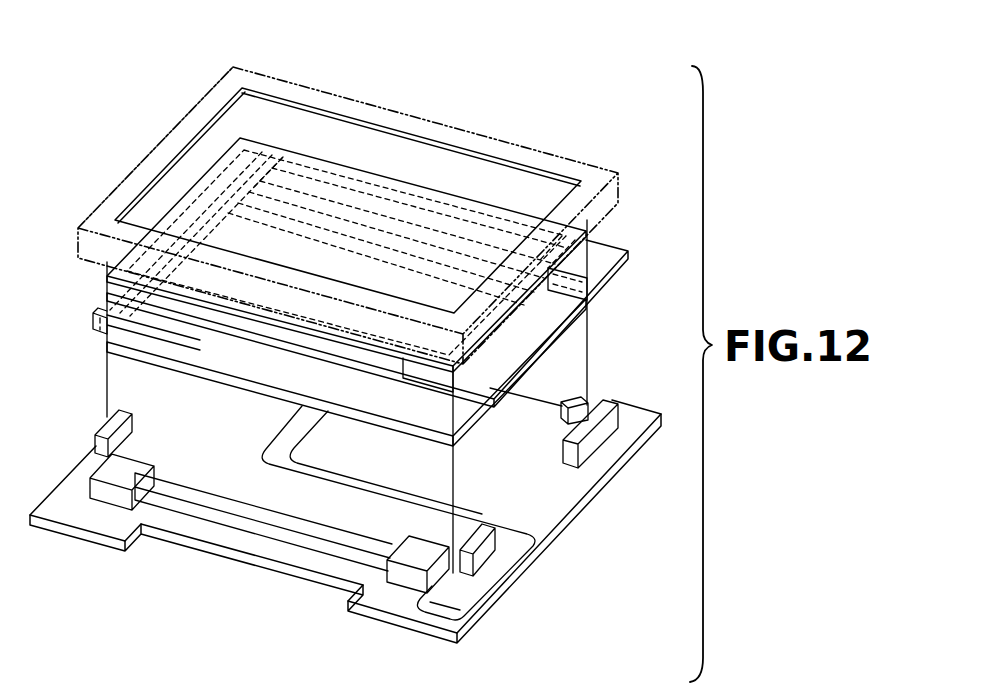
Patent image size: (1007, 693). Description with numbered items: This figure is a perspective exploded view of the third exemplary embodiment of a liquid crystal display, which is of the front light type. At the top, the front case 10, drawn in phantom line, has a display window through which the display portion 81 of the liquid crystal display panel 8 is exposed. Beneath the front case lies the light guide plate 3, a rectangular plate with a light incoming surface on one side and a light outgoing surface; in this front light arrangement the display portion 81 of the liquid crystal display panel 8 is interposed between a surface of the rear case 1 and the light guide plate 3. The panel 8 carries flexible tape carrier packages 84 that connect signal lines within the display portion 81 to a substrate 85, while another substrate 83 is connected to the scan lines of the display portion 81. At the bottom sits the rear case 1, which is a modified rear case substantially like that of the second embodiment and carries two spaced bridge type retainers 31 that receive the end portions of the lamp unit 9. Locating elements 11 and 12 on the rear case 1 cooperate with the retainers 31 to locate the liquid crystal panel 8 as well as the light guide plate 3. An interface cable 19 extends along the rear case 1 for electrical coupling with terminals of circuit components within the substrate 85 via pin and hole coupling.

The rear case 1 is at (60, 515).
The light guide plate 3 is at (215, 166).
The liquid crystal display panel 8 is at (562, 362).
The lamp unit 9 is at (246, 546).
The front case 10 is at (400, 116).
The locating element 11 is at (600, 445).
The locating element 12 is at (92, 453).
The interface cable 19 is at (488, 609).
The bridge type retainer 31 is at (104, 497).
The display portion 81 is at (165, 347).
The substrate 83 is at (93, 322).
The flexible tape carrier package 84 is at (590, 292).
The substrate 85 is at (612, 248).